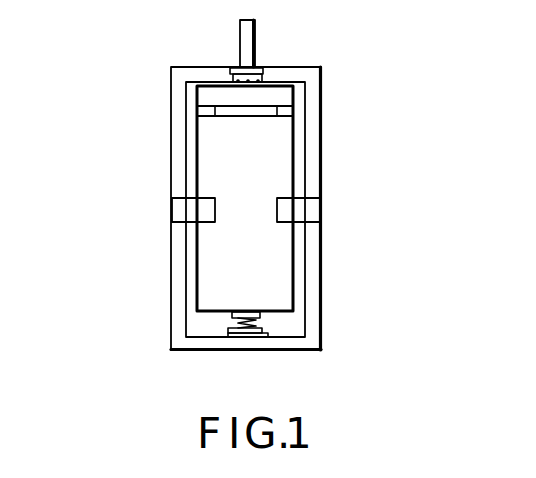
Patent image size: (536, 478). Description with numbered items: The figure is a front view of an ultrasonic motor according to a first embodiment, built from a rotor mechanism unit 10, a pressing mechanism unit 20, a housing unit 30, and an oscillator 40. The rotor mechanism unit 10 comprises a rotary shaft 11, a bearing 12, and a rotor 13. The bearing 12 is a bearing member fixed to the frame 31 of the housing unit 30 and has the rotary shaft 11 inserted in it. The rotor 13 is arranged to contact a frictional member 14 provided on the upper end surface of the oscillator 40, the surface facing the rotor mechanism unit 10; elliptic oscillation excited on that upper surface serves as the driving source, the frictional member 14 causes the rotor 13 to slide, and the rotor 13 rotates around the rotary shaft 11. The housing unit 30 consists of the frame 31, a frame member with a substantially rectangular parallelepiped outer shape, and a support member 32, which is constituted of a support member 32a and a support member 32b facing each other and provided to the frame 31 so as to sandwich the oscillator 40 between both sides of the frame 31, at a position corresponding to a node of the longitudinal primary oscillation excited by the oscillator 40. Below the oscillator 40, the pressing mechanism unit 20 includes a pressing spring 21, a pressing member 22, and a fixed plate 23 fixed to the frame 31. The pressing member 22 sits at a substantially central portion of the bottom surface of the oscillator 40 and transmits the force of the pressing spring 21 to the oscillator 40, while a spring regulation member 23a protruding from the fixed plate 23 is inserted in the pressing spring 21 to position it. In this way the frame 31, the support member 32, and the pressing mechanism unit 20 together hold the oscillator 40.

The rotor mechanism unit 10 is at (105, 55).
The rotary shaft 11 is at (240, 42).
The bearing 12 is at (226, 70).
The rotor 13 is at (208, 97).
The frictional member 14 is at (202, 112).
The pressing mechanism unit 20 is at (383, 280).
The pressing spring 21 is at (253, 322).
The pressing member 22 is at (250, 313).
The fixed plate 23 is at (265, 334).
The spring regulation member 23a is at (258, 330).
The housing unit 30 is at (432, 165).
The frame 31 is at (307, 163).
The support member 32 is at (300, 226).
The support member 32a is at (298, 210).
The support member 32b is at (200, 210).
The oscillator 40 is at (270, 267).